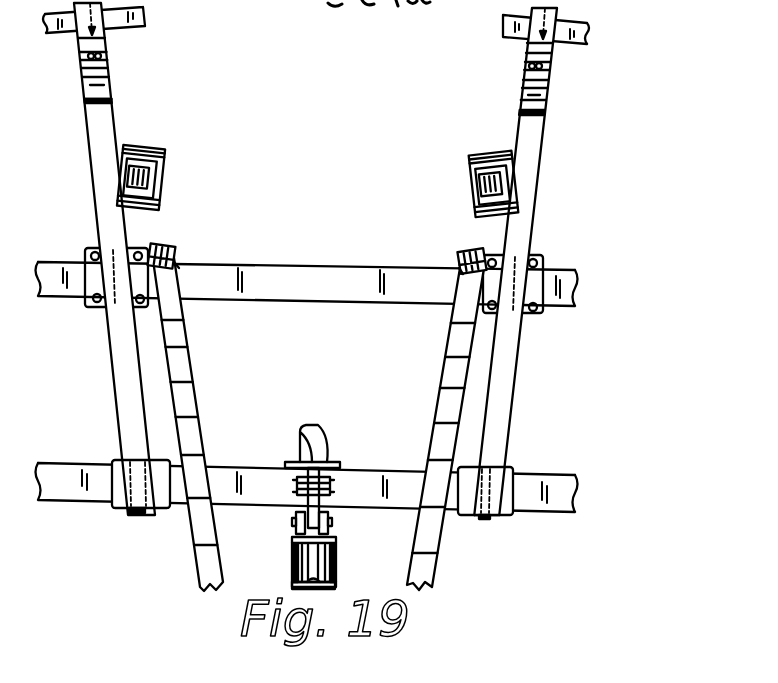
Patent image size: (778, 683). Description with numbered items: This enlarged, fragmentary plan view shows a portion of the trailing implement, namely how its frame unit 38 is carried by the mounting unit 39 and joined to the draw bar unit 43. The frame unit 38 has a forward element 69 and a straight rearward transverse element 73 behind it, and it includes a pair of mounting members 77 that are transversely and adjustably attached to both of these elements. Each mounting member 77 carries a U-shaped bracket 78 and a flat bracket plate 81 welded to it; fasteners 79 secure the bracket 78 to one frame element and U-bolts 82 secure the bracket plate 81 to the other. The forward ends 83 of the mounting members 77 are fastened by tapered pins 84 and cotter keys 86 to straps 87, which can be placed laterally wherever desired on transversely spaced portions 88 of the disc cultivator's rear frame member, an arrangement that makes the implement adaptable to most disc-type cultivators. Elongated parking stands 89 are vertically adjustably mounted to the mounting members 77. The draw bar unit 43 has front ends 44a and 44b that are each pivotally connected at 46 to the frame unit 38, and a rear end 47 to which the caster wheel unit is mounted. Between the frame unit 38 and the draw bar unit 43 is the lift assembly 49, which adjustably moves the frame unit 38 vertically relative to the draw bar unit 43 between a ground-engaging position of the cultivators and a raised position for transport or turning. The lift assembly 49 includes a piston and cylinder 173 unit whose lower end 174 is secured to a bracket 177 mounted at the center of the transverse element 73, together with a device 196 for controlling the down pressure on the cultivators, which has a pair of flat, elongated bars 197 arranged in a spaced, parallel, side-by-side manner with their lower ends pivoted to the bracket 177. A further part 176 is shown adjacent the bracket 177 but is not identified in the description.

The frame unit 38 is at (392, 245).
The mounting unit 39 is at (641, 138).
The draw bar unit 43 is at (451, 580).
The front end 44a is at (183, 262).
The front end 44b is at (460, 274).
The pivotal connection 46 is at (160, 245).
The rear end 47 is at (197, 553).
The lift assembly 49 is at (346, 569).
The forward element 69 is at (277, 268).
The rearward transverse element 73 is at (226, 462).
The mounting members 77 is at (97, 133).
The U-shaped bracket 78 is at (115, 460).
The fasteners 79 is at (137, 514).
The flat bracket plate 81 is at (86, 300).
The U-bolts 82 is at (88, 247).
The forward ends 83 is at (102, 90).
The tapered pins 84 is at (84, 74).
The cotter keys 86 is at (85, 57).
The straps 87 is at (107, 38).
The transversely spaced portions 88 is at (107, 35).
The parking stands 89 is at (147, 173).
The cylinder 173 is at (293, 575).
The lower end 174 is at (293, 535).
The clamp 176 is at (292, 523).
The bracket 177 is at (323, 511).
The down pressure control device 196 is at (338, 479).
The flat elongated bars 197 is at (308, 427).